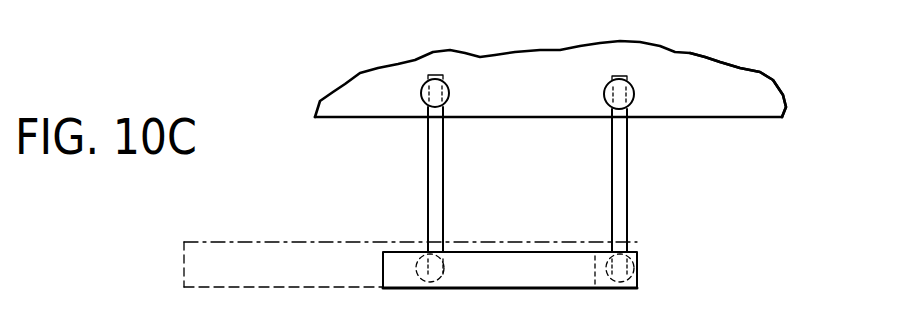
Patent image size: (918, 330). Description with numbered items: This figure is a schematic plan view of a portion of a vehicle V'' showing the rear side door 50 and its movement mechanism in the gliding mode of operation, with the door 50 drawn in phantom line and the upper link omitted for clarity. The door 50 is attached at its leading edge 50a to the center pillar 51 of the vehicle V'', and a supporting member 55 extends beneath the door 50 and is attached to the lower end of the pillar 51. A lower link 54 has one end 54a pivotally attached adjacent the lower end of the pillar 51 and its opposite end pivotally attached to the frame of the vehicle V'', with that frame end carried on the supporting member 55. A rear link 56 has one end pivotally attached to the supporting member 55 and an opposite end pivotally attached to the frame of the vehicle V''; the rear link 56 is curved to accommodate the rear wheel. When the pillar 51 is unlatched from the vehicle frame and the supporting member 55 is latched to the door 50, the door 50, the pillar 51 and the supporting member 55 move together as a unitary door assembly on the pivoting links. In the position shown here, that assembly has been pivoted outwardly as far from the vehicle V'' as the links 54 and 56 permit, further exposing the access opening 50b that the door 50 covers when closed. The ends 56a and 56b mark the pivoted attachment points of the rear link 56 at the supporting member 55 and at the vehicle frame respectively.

The vehicle V'' is at (577, 72).
The rear side door 50 is at (218, 250).
The leading edge 50a is at (553, 97).
The access opening 50b is at (717, 103).
The center pillar 51 is at (640, 279).
The lower link 54 is at (635, 97).
The end of lower link 54a is at (640, 265).
The supporting member 55 is at (495, 267).
The rear link 56 is at (442, 165).
The left pin seat 56a is at (413, 255).
The left pin head 56b is at (449, 96).